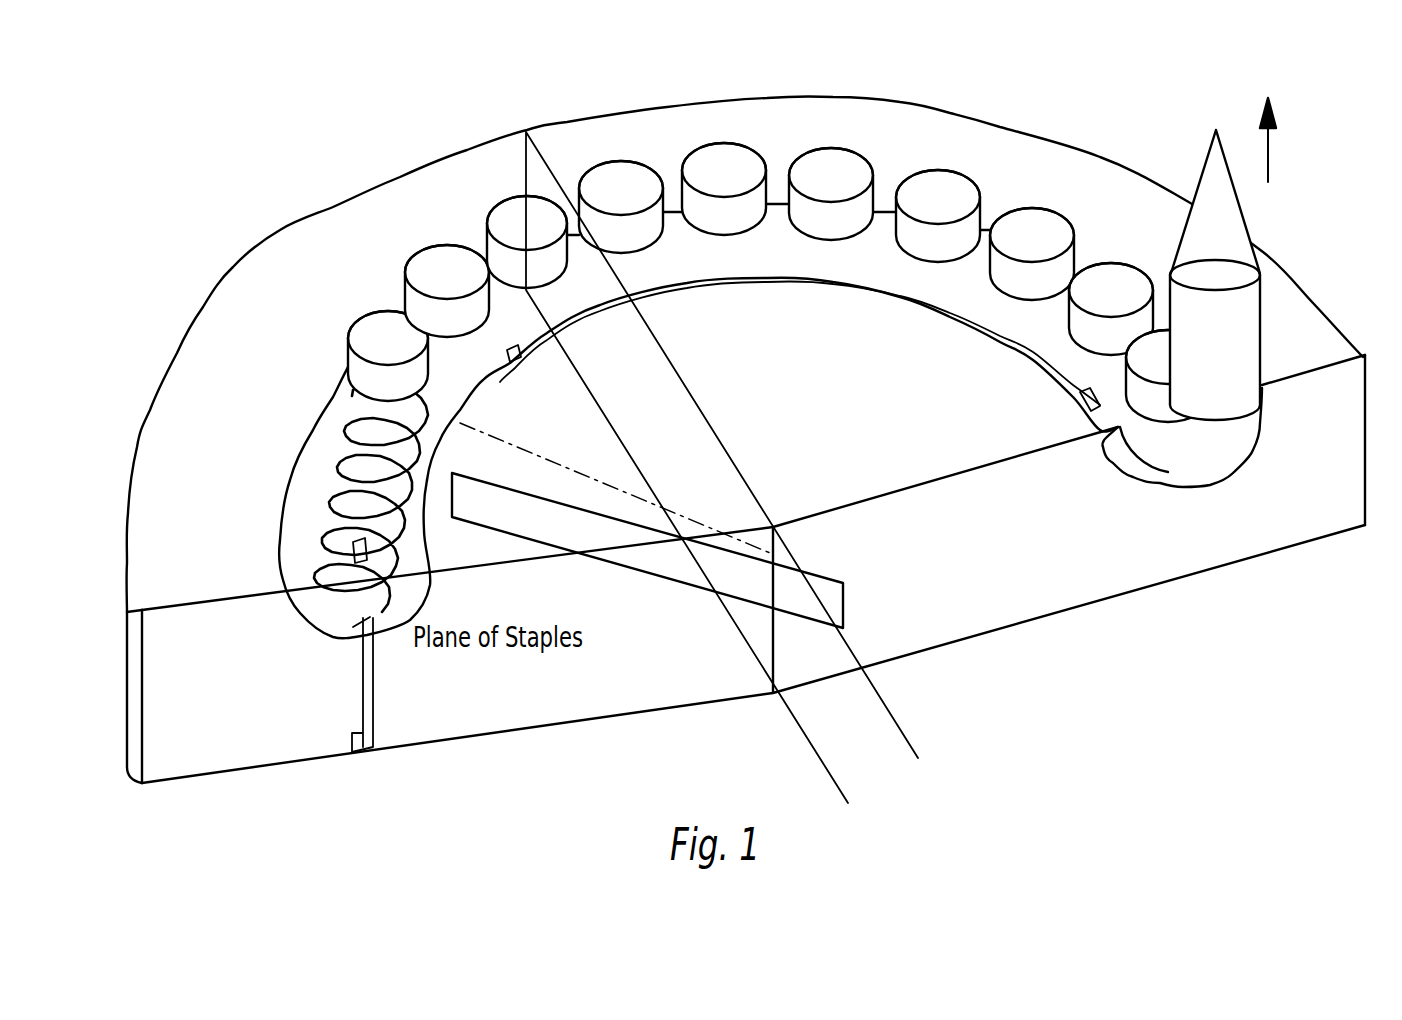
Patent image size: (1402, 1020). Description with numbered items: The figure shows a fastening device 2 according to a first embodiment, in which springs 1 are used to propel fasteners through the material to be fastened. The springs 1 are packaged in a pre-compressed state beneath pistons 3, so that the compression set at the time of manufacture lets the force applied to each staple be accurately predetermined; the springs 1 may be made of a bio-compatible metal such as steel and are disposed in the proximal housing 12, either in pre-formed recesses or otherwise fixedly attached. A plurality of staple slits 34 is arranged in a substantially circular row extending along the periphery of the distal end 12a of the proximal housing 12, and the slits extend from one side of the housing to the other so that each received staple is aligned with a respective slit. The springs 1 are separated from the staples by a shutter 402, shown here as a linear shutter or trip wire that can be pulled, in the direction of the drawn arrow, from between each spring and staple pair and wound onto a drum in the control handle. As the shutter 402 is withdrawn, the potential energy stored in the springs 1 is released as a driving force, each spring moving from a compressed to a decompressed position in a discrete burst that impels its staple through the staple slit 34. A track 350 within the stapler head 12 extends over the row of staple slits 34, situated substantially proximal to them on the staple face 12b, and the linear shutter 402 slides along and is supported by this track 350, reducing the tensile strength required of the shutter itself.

The fastening device 2 is at (742, 73).
The proximal housing 12 is at (170, 348).
The distal end 12a is at (233, 783).
The staple face 12b is at (330, 213).
The track 350 is at (300, 400).
The springs 1 is at (335, 540).
The staple slits 34 is at (360, 558).
The pistons 3 is at (598, 162).
The shutter 402 is at (1213, 188).